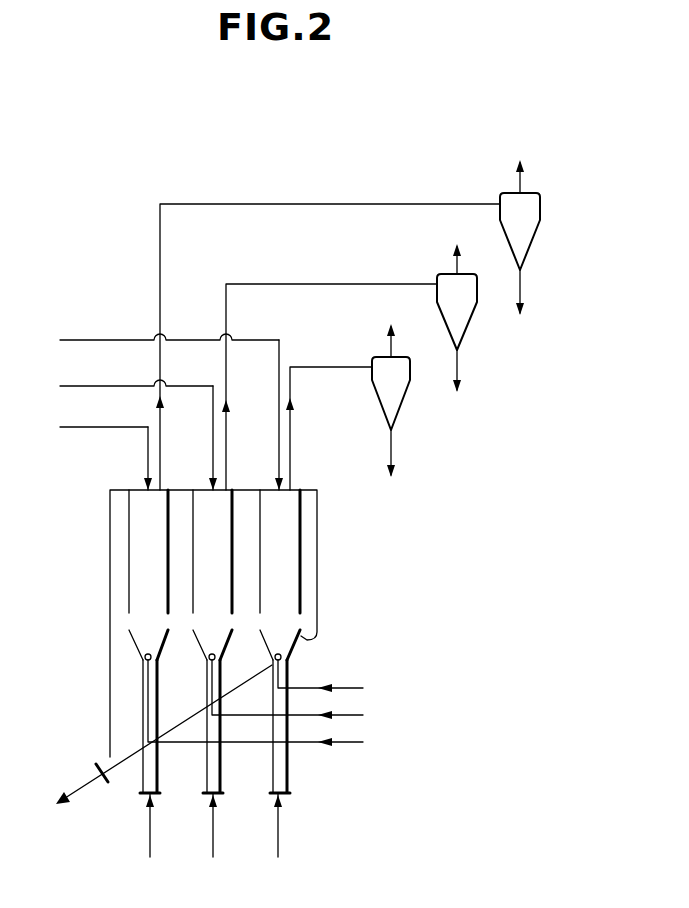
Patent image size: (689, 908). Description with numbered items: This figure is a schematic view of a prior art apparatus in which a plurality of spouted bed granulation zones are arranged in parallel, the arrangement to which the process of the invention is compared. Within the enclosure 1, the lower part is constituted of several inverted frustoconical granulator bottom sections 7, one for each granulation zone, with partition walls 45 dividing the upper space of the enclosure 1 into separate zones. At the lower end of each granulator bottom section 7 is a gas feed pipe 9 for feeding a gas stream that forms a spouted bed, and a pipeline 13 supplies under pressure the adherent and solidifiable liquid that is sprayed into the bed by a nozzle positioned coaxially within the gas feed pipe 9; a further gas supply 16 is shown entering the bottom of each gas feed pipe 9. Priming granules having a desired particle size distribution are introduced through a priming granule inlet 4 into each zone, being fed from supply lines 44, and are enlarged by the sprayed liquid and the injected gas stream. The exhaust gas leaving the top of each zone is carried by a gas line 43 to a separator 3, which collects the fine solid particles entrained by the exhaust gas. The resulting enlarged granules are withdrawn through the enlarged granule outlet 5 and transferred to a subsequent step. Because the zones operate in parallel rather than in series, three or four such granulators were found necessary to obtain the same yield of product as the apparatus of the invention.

The enclosure 1 is at (104, 530).
The separator 3 is at (530, 250).
The priming granule inlet 4 is at (147, 483).
The enlarged granule outlet 5 is at (113, 780).
The granulator bottom section 7 is at (130, 642).
The gas feed pipe 9 is at (157, 768).
The pipeline 13 is at (363, 742).
The fluidizing gas inlet 16 is at (150, 835).
The product gas line 43 is at (333, 284).
The feed supply line 44 is at (122, 386).
The partition wall 45 is at (129, 608).